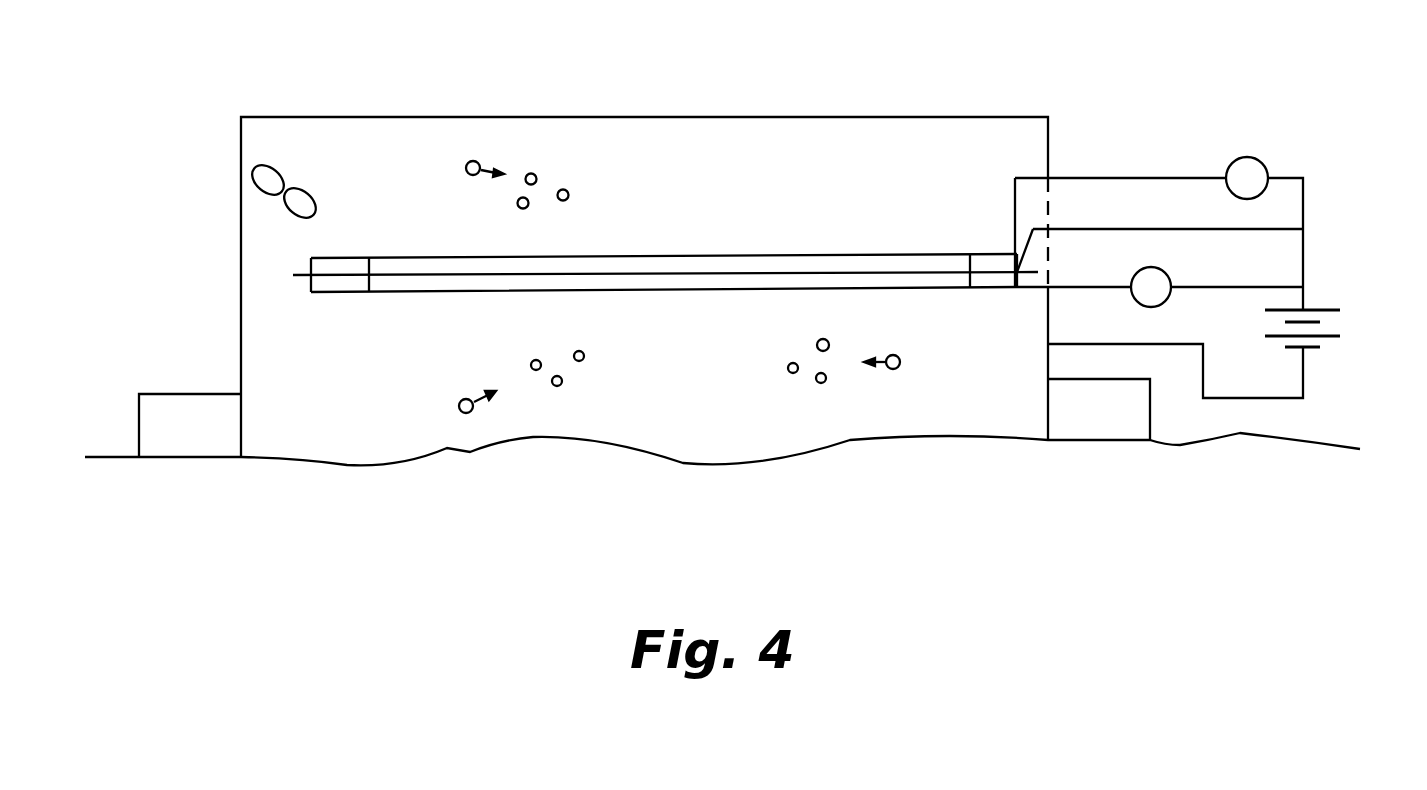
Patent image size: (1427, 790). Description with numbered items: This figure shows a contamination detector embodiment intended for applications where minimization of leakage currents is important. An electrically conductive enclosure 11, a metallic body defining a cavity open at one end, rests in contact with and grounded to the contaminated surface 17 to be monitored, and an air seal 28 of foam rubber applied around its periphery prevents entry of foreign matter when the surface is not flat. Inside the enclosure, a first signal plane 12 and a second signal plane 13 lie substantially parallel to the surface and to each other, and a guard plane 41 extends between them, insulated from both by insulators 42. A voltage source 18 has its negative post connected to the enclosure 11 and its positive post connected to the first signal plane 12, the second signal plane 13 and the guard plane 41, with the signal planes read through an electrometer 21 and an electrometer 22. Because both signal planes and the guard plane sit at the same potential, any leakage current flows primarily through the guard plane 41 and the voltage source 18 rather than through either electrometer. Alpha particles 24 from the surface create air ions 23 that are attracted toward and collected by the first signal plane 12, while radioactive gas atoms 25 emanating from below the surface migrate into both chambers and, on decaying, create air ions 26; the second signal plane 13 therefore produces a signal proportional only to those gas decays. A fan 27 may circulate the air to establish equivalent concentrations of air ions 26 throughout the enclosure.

The electrically conductive enclosure 11 is at (241, 241).
The first signal plane 12 is at (427, 293).
The second signal plane 13 is at (735, 253).
The contaminated surface 17 is at (110, 465).
The voltage source 18 is at (1378, 331).
The electrometer 21 is at (1163, 303).
The electrometer 22 is at (1262, 165).
The air ions 23 is at (572, 370).
The alpha particles 24 is at (455, 405).
The radioactive gas atoms 25 is at (462, 172).
The air ions 26 is at (552, 182).
The fan 27 is at (355, 179).
The air seal 28 is at (178, 392).
The guard plane 41 is at (290, 275).
The insulators 42 is at (311, 287).